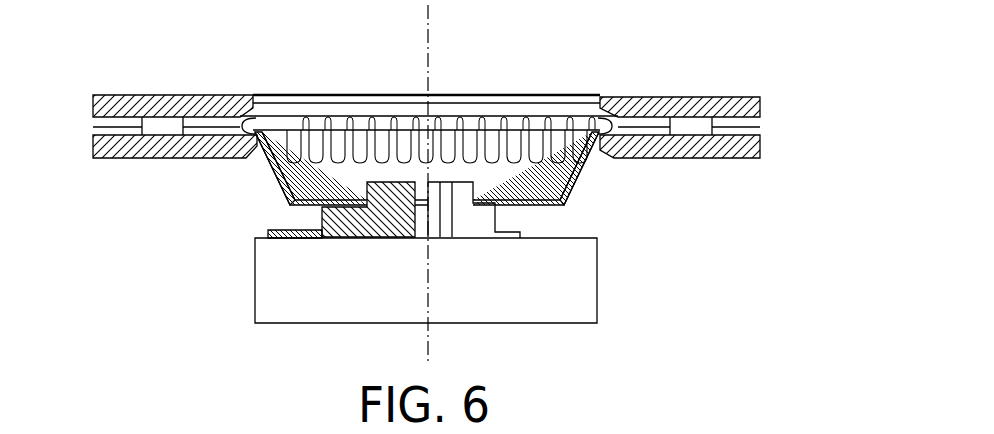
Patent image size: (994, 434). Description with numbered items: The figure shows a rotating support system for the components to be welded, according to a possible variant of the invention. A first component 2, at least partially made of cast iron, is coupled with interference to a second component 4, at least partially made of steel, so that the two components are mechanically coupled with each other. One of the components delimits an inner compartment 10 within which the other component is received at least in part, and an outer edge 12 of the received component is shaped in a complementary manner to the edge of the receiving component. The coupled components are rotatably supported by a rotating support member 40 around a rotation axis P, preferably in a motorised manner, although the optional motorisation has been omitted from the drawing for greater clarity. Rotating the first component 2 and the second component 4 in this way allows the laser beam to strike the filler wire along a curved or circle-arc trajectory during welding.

The first component 2 is at (743, 92).
The inner compartment 10 is at (505, 128).
The outer edge 12 is at (268, 168).
The second component 4 is at (587, 183).
The rotating support member 40 is at (506, 222).
The rotation axis P is at (404, 20).